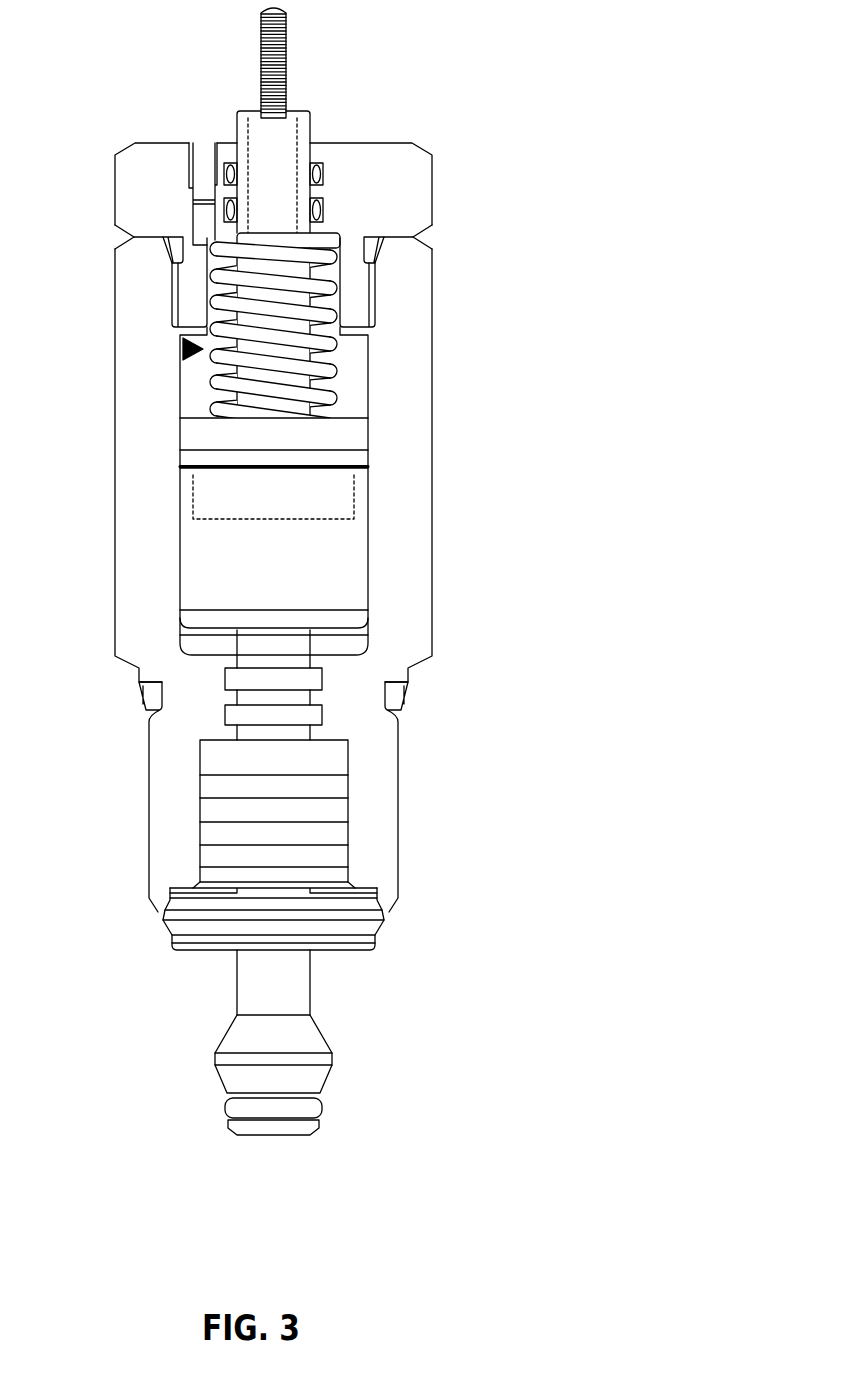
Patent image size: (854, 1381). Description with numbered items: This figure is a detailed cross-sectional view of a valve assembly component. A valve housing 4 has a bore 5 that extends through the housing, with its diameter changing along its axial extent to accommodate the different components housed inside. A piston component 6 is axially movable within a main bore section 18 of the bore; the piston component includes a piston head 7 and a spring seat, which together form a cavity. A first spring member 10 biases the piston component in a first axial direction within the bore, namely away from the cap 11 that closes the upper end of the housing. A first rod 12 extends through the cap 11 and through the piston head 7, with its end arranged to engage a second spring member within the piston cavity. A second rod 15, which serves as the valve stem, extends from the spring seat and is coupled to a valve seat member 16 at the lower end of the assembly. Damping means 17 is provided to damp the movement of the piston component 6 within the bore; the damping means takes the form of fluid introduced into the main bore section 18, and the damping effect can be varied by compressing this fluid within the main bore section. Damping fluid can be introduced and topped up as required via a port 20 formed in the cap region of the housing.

The valve housing 4 is at (412, 385).
The bore 5 is at (195, 378).
The piston component 6 is at (337, 510).
The piston head 7 is at (353, 433).
The first spring member 10 is at (315, 283).
The cap 11 is at (407, 188).
The first rod 12 is at (278, 150).
The second rod 15 is at (295, 647).
The valve seat member 16 is at (315, 1075).
The damping means 17 is at (183, 349).
The main bore section 18 is at (187, 395).
The port 20 is at (200, 160).